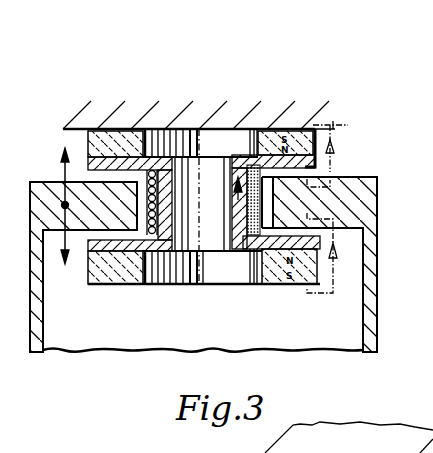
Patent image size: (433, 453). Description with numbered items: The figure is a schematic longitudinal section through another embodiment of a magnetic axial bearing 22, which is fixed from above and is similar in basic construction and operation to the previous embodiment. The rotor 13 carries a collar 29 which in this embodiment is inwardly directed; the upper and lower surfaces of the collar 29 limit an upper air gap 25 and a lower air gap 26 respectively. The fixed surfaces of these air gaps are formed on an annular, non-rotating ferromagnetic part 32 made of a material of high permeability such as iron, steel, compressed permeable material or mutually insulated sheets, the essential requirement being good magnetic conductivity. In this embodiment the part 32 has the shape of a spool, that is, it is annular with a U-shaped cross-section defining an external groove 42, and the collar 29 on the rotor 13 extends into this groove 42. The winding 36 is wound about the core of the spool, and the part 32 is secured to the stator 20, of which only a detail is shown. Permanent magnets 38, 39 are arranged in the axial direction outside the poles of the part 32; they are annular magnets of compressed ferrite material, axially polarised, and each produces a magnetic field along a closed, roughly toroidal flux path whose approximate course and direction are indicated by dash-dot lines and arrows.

The rotor 13 is at (43, 320).
The stator 20 is at (177, 118).
The bearing 22 is at (347, 130).
The upper air gap 25 is at (303, 172).
The lower air gap 26 is at (315, 232).
The collar 29 is at (337, 196).
The annular non-rotating ferromagnetic part 32 is at (239, 252).
The winding 36 is at (177, 222).
The permanent magnet 38 is at (97, 137).
The permanent magnet 39 is at (105, 263).
The external groove 42 is at (138, 220).